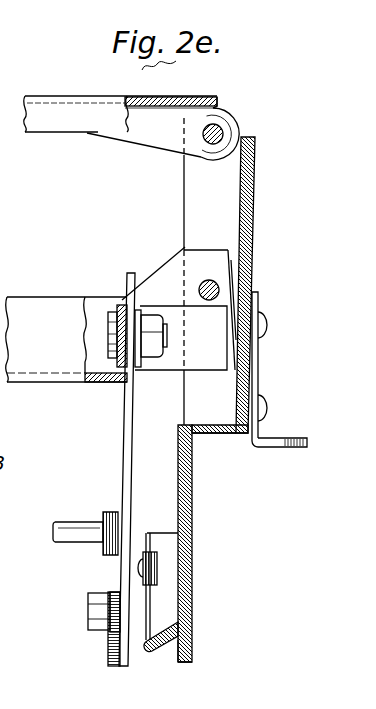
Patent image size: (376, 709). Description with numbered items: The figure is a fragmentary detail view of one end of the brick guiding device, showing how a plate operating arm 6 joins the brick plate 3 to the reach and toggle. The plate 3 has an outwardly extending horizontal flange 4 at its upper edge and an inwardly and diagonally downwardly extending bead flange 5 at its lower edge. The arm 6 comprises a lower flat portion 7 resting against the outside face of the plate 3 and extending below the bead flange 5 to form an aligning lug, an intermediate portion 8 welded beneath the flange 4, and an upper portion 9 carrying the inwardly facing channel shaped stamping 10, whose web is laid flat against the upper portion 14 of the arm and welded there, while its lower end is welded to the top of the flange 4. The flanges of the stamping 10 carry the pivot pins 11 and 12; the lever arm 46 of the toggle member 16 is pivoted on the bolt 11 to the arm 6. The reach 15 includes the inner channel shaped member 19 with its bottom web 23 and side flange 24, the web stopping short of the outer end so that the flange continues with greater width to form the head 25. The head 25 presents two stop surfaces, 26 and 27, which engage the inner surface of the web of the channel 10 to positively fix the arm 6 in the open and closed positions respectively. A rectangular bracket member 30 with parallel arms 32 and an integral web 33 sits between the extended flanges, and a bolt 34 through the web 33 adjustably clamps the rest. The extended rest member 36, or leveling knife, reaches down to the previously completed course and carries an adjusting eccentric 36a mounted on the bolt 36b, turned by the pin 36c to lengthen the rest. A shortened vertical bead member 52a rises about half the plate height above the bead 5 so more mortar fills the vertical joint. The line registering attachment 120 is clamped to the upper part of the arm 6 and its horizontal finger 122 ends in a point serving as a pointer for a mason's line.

The brick plate 3 is at (180, 492).
The horizontal flange 4 is at (216, 425).
The bead flange 5 is at (146, 655).
The plate operating arm 6 is at (274, 274).
The lower flat portion 7 is at (186, 645).
The intermediate portion 8 is at (220, 436).
The upper portion 9 is at (253, 393).
The channel shaped stamping 10 is at (228, 271).
The pivot pin 11 is at (220, 129).
The pivot pin 12 is at (218, 292).
The upper portion of the arm 14 is at (257, 187).
The reach 15 is at (27, 294).
The toggle member 16 is at (54, 95).
The inner channel shaped member 19 is at (50, 310).
The bottom web 23 is at (101, 383).
The side flange 24 is at (98, 305).
The head 25 is at (200, 249).
The stop surface 26 is at (234, 262).
The stop surface 27 is at (239, 340).
The rectangular bracket member 30 is at (210, 352).
The arm of bracket 32 is at (170, 308).
The web of bracket 33 is at (108, 362).
The bolt 34 is at (166, 342).
The extended rest member 36 is at (127, 460).
The adjusting eccentric 36a is at (116, 568).
The bolt 36b is at (88, 612).
The pin 36c is at (88, 522).
The lever arm 46 is at (97, 130).
The shortened vertical bead member 52a is at (167, 568).
The line registering attachment 120 is at (254, 300).
The horizontal finger 122 is at (277, 448).